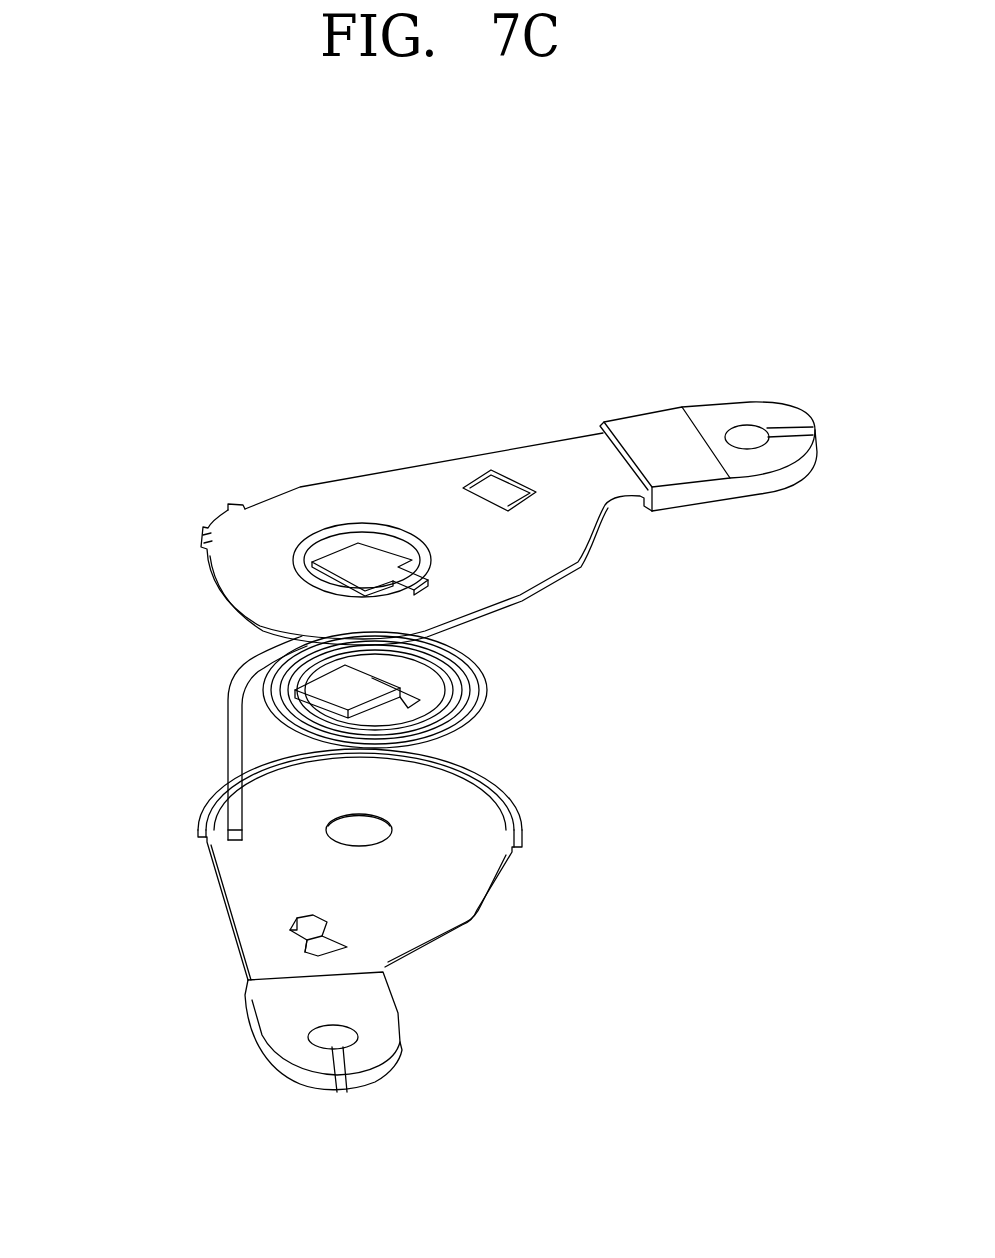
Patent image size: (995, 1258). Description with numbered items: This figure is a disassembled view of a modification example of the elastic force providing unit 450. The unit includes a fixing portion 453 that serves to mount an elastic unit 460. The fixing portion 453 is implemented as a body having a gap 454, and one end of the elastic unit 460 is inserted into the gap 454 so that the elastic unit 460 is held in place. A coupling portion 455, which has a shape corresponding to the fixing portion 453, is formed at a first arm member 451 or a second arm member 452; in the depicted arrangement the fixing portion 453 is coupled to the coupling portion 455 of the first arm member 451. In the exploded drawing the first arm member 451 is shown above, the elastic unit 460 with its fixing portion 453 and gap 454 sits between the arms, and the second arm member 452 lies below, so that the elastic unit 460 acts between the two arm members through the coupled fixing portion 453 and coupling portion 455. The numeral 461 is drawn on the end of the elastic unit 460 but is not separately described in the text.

The elastic force providing unit 450 is at (728, 343).
The first arm member 451 is at (531, 458).
The second arm member 452 is at (368, 1008).
The fixing portion 453 is at (367, 683).
The gap 454 is at (296, 674).
The coupling portion 455 is at (360, 553).
The elastic unit 460 is at (190, 668).
The spring wire end 461 is at (237, 765).